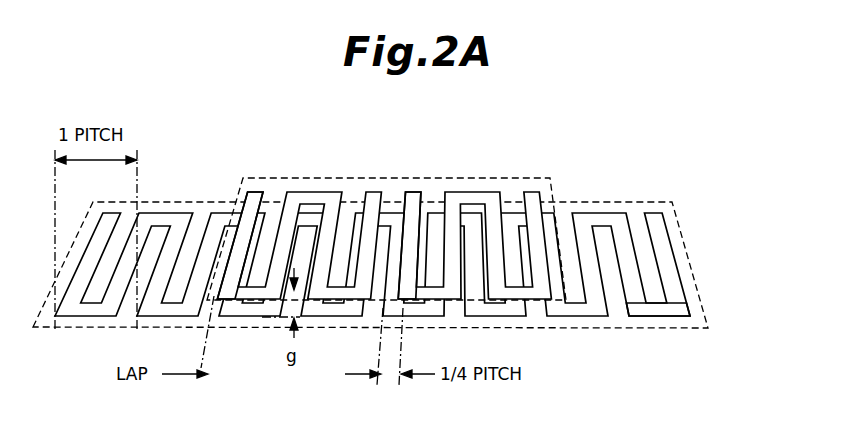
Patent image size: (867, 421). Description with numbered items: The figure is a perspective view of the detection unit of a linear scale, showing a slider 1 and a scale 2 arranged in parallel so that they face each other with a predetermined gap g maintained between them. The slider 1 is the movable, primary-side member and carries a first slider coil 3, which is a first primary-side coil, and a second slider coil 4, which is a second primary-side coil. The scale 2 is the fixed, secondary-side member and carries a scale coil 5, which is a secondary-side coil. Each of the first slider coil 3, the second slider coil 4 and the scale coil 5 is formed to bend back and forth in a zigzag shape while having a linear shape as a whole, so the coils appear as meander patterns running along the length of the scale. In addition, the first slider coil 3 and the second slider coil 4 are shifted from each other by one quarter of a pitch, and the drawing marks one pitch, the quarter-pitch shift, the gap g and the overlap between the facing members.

The slider 1 is at (508, 177).
The scale 2 is at (692, 229).
The first slider coil 3 is at (252, 212).
The second slider coil 4 is at (412, 194).
The scale coil 5 is at (692, 312).